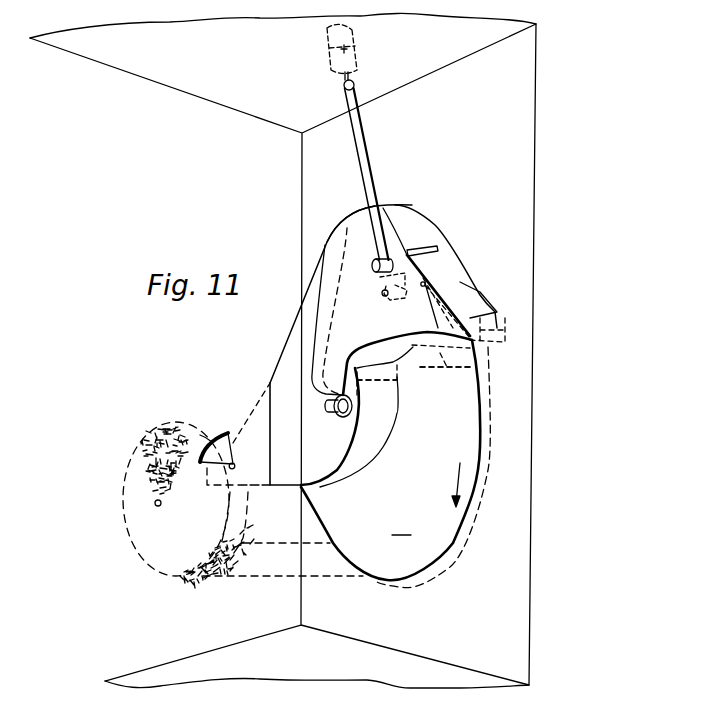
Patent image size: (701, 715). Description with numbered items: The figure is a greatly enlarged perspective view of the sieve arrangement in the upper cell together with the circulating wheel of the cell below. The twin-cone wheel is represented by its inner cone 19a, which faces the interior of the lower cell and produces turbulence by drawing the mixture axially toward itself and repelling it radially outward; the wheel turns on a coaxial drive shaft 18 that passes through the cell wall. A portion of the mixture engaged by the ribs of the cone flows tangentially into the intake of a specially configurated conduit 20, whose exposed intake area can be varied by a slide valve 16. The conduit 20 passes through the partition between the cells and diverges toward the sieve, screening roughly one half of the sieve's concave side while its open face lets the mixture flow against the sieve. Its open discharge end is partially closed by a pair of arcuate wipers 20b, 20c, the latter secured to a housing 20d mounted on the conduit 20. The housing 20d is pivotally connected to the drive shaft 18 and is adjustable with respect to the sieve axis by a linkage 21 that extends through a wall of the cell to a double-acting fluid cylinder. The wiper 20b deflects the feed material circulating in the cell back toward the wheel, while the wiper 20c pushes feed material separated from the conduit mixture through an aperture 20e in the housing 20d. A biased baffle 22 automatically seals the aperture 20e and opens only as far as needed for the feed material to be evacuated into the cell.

The slide valve 16 is at (213, 433).
The drive shaft 18 is at (337, 412).
The cone 19a is at (150, 550).
The conduit 20 is at (293, 328).
The wiper 20b is at (387, 438).
The wiper 20c is at (416, 358).
The housing 20d is at (358, 211).
The aperture 20e is at (437, 320).
The linkage 21 is at (370, 157).
The baffle 22 is at (463, 282).